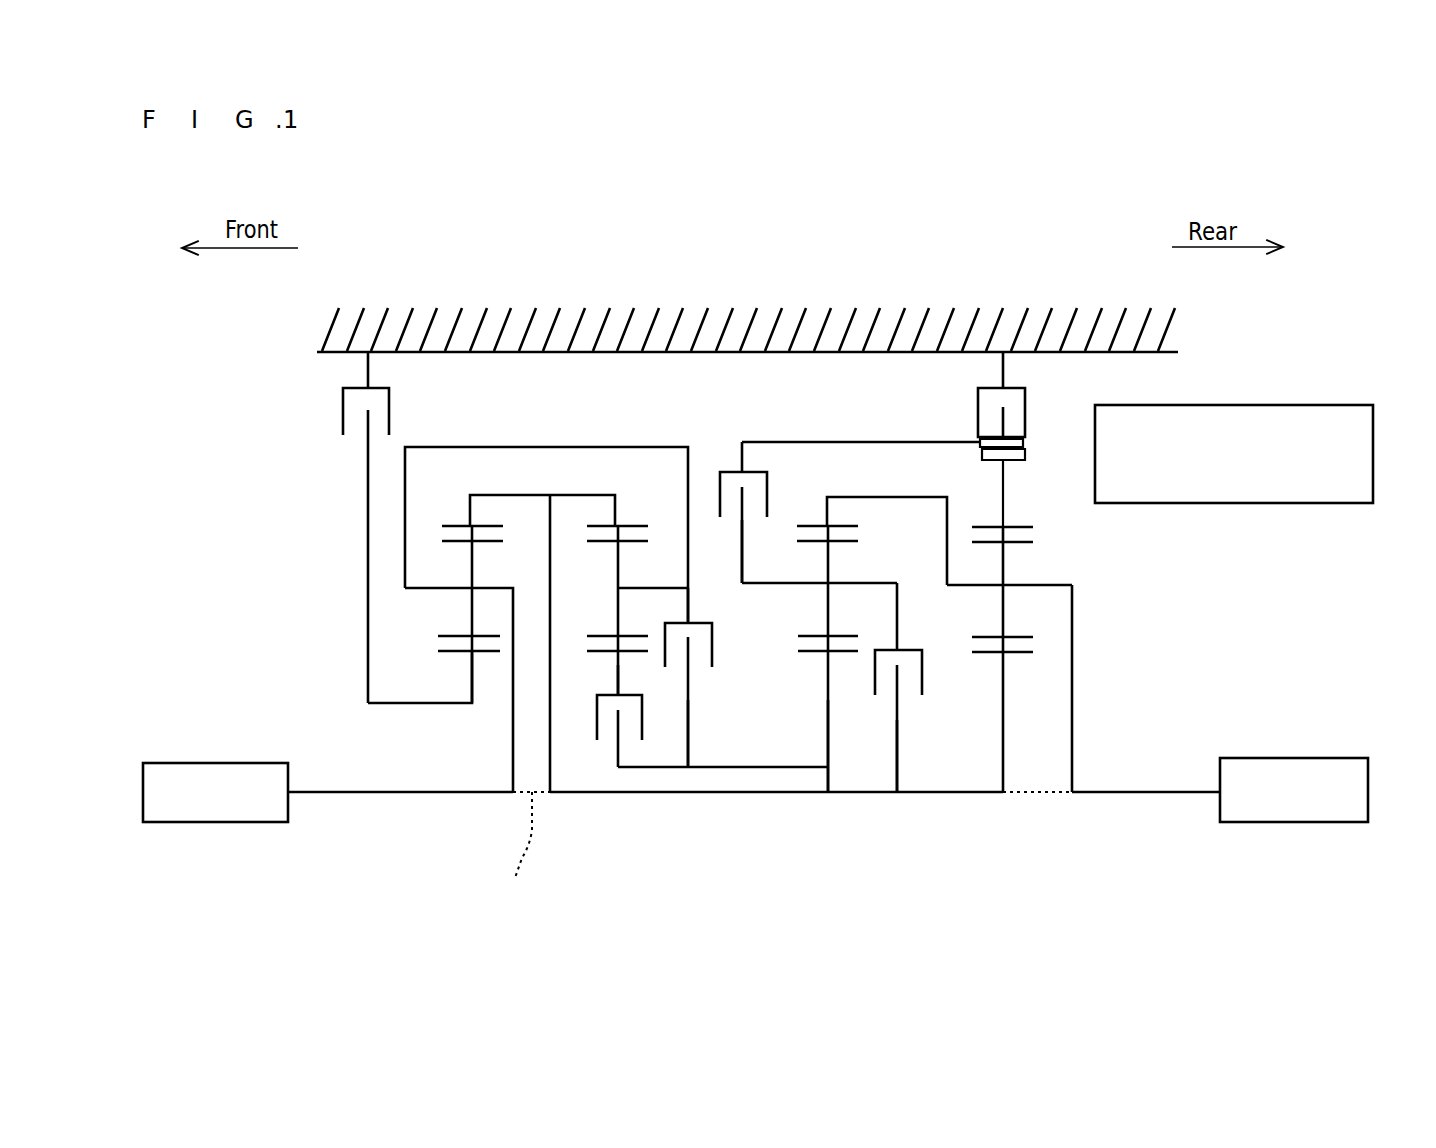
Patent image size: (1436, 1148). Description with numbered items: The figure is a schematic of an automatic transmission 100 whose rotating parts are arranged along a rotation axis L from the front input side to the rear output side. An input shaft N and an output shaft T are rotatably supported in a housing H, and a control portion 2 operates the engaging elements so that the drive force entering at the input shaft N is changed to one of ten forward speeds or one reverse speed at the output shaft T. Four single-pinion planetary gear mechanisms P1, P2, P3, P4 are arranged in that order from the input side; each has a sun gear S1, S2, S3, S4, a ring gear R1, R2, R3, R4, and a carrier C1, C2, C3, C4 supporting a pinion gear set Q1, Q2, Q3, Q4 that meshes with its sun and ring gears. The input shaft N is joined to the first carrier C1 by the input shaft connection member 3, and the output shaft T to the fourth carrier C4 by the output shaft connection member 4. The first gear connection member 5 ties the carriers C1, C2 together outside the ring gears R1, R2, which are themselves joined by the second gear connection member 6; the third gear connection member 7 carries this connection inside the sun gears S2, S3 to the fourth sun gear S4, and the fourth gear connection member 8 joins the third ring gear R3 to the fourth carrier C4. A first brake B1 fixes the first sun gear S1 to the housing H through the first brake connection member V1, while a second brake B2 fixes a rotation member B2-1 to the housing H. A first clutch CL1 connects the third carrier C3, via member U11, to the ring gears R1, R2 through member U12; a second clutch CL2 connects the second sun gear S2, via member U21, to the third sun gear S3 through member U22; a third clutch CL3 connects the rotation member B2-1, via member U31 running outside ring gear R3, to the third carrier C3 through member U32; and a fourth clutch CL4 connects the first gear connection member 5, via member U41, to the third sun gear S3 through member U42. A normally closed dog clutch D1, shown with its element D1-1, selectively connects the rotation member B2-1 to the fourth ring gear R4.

The automatic transmission 100 is at (970, 291).
The housing H is at (706, 330).
The control portion 2 is at (1255, 405).
The input shaft connection member 3 is at (425, 793).
The output shaft connection member 4 is at (1155, 793).
The first gear connection member 5 is at (505, 446).
The second gear connection member 6 is at (509, 494).
The third gear connection member 7 is at (798, 796).
The fourth gear connection member 8 is at (868, 496).
The input shaft N is at (210, 823).
The output shaft T is at (1297, 823).
The rotation axis L is at (521, 854).
The first brake B1 is at (330, 436).
The second brake B2 is at (1040, 404).
The rotation member B2-1 is at (1023, 440).
The dog clutch D1 is at (980, 471).
The one-way clutch plate D1-1 is at (1010, 457).
The first brake connection member V1 is at (367, 588).
The first ring gear R1 is at (454, 524).
The second ring gear R2 is at (630, 524).
The third ring gear R3 is at (816, 524).
The fourth ring gear R4 is at (1012, 524).
The first carrier C1 is at (483, 586).
The second carrier C2 is at (621, 586).
The third carrier C3 is at (857, 582).
The fourth carrier C4 is at (1015, 583).
The first pinion gear set Q1 is at (469, 609).
The second pinion gear set Q2 is at (617, 608).
The third pinion gear set Q3 is at (828, 615).
The fourth pinion gear set Q4 is at (1004, 607).
The first sun gear S1 is at (471, 672).
The second sun gear S2 is at (617, 670).
The third sun gear S3 is at (827, 668).
The fourth sun gear S4 is at (1002, 670).
The first planetary gear mechanism P1 is at (484, 682).
The second planetary gear mechanism P2 is at (653, 709).
The third planetary gear mechanism P3 is at (842, 666).
The fourth planetary gear mechanism P4 is at (1037, 647).
The first clutch CL1 is at (917, 705).
The second clutch CL2 is at (591, 757).
The third clutch CL3 is at (718, 458).
The fourth clutch CL4 is at (755, 638).
The first clutch connection member U11 is at (898, 618).
The first clutch connection member U12 is at (895, 762).
The second clutch connection member U21 is at (618, 683).
The second clutch connection member U22 is at (674, 768).
The third clutch direct connection member U31 is at (860, 441).
The third clutch connection member U32 is at (745, 553).
The fourth clutch direct connection member U41 is at (688, 608).
The fourth clutch connection member U42 is at (688, 745).